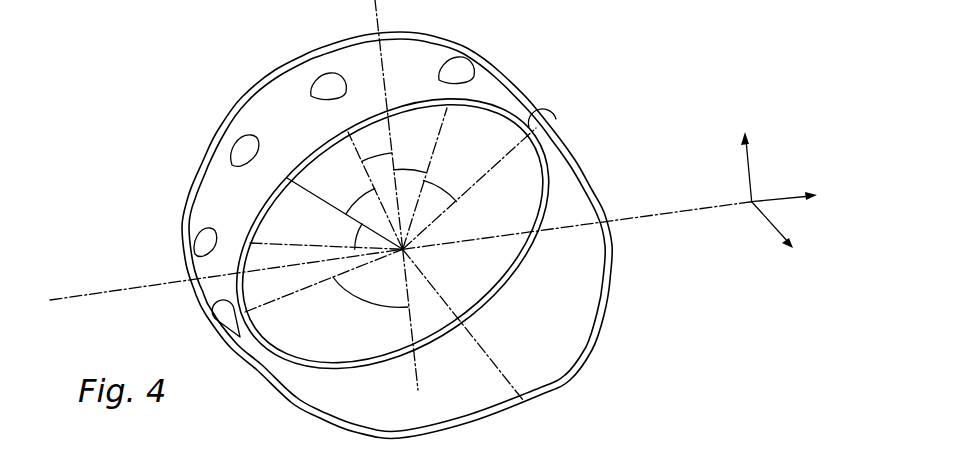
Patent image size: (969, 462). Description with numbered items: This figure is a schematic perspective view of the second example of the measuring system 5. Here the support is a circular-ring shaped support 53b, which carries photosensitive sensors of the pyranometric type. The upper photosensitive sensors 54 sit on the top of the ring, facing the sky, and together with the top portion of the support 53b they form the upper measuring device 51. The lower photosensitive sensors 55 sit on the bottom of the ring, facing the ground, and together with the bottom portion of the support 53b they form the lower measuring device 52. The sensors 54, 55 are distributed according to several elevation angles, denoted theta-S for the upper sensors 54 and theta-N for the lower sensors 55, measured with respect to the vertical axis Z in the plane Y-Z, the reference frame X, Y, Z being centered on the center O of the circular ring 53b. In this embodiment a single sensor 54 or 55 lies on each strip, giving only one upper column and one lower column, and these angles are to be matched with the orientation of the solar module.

The measuring system 5 is at (112, 167).
The upper measuring device 51 is at (516, 50).
The lower measuring device 52 is at (271, 412).
The circular-ring shaped support 53b is at (217, 183).
The upper photosensitive sensors 54 is at (313, 88).
The lower photosensitive sensors 55 is at (142, 0).